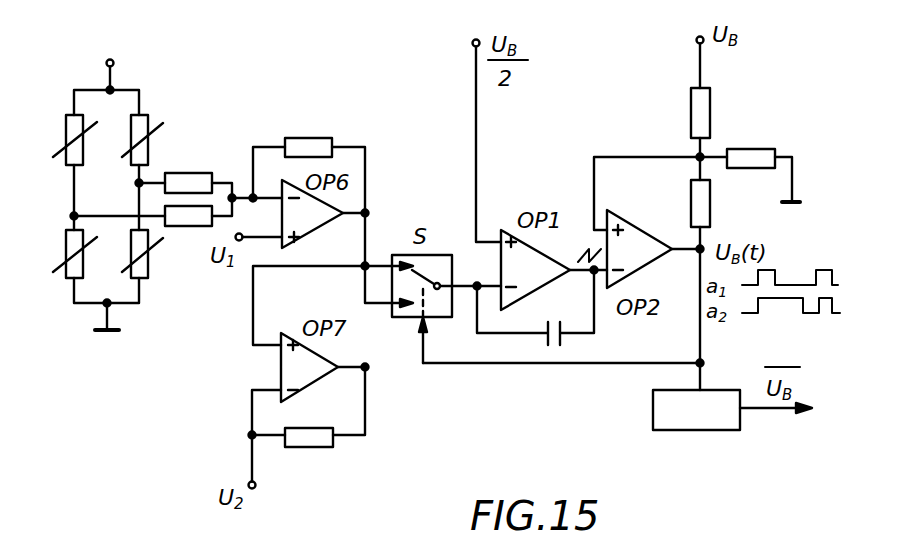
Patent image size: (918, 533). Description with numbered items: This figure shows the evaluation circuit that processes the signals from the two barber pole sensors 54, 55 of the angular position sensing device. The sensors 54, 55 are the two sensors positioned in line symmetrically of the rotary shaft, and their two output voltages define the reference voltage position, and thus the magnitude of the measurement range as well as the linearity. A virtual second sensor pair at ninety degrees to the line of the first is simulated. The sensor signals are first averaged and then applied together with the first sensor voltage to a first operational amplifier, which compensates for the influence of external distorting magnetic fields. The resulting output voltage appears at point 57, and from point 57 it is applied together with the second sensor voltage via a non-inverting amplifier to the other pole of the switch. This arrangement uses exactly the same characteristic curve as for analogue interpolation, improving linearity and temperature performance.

The barber pole sensor 54 is at (55, 163).
The barber pole sensor 55 is at (121, 260).
The point 57 is at (362, 268).